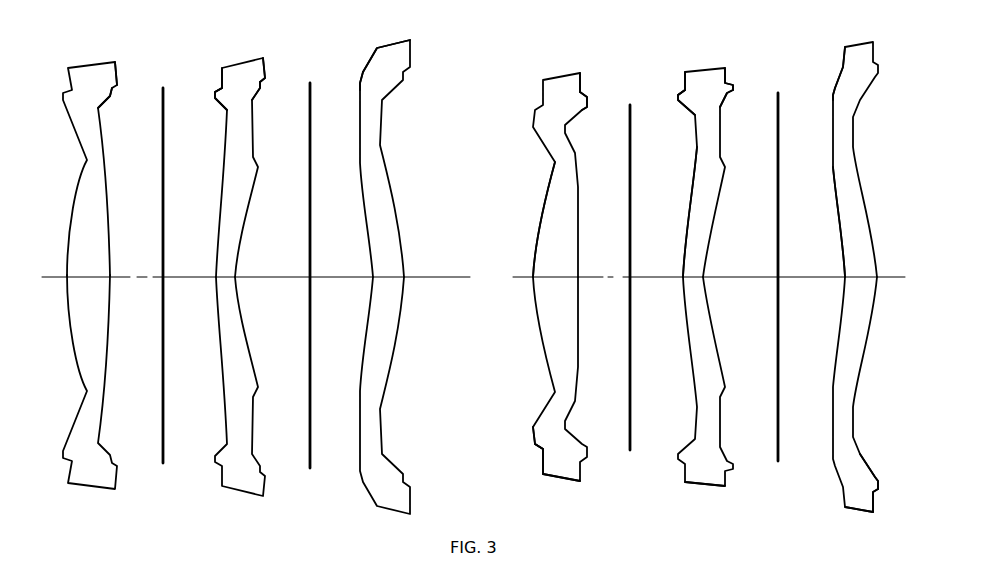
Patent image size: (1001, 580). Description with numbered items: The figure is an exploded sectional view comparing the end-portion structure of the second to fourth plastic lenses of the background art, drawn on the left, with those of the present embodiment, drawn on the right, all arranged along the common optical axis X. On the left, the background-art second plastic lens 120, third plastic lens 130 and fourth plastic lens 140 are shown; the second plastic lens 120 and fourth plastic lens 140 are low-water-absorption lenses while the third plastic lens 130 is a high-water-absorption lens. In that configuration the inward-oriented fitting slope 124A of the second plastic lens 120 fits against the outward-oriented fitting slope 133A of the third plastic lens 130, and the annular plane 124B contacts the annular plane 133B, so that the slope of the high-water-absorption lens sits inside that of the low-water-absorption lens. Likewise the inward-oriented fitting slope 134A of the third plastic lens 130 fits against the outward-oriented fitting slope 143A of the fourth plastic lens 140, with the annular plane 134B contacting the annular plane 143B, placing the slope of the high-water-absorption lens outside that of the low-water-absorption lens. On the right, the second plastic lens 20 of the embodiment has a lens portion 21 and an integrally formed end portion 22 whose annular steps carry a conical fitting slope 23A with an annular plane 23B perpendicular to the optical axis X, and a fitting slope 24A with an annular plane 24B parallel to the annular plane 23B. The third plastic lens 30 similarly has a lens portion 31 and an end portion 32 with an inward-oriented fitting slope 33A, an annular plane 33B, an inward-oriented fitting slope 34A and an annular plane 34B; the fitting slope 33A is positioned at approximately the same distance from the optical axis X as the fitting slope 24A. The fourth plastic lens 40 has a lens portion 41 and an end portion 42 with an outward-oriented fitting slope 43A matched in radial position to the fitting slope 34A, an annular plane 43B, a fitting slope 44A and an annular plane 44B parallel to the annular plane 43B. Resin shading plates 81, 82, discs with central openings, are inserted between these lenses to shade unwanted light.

The optical axis X is at (58, 276).
The second plastic lens 120 is at (72, 212).
The fitting slope 124A is at (112, 90).
The annular plane 124B is at (118, 77).
The third plastic lens 130 is at (217, 213).
The fitting slope 133A is at (216, 90).
The annular plane 133B is at (218, 89).
The fitting slope 134A is at (261, 85).
The annular plane 134B is at (264, 78).
The fourth plastic lens 140 is at (373, 230).
The fitting slope 143A is at (360, 81).
The annular plane 143B is at (363, 72).
The second plastic lens 20 is at (535, 222).
The lens portion 21 is at (556, 281).
The end portion 22 is at (560, 468).
The fitting slope 23A is at (535, 441).
The annular plane 23B is at (535, 441).
The fitting slope 24A is at (588, 93).
The annular plane 24B is at (583, 80).
The third plastic lens 30 is at (682, 230).
The lens portion 31 is at (695, 282).
The end portion 32 is at (705, 476).
The fitting slope 33A is at (680, 100).
The annular plane 33B is at (682, 97).
The fitting slope 34A is at (727, 94).
The annular plane 34B is at (734, 91).
The fourth plastic lens 40 is at (845, 222).
The lens portion 41 is at (862, 281).
The end portion 42 is at (848, 498).
The fitting slope 43A is at (834, 92).
The annular plane 43B is at (836, 90).
The fitting slope 44A is at (880, 491).
The annular plane 44B is at (876, 502).
The shading plate 81 is at (630, 430).
The shading plate 82 is at (779, 443).